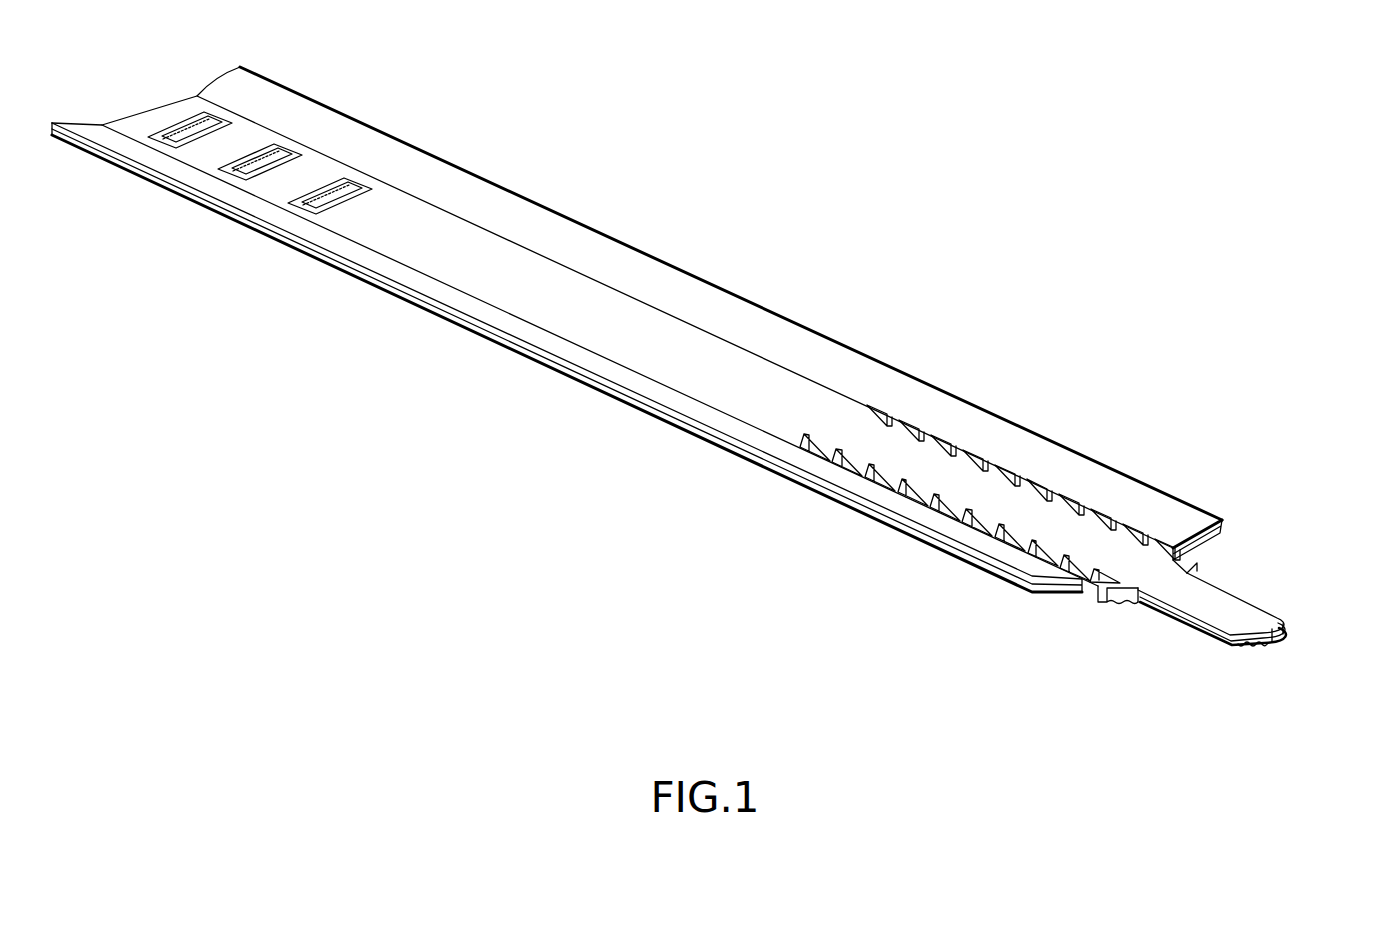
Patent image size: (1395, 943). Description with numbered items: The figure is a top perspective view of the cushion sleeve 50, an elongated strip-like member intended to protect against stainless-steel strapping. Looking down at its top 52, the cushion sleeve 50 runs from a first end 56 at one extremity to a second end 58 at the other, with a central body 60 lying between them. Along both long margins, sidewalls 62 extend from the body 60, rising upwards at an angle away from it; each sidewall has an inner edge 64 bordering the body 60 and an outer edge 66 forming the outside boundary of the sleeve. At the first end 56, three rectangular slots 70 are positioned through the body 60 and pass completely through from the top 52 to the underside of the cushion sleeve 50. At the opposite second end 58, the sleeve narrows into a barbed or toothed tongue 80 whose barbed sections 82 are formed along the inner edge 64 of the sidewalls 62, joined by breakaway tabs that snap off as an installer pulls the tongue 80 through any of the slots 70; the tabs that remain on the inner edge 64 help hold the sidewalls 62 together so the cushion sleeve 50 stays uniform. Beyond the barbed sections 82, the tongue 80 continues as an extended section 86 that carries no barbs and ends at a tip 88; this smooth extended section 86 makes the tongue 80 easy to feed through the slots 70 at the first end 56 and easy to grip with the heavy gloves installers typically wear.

The cushion sleeve 50 is at (789, 176).
The top 52 is at (825, 410).
The first end 56 is at (147, 110).
The second end 58 is at (1200, 522).
The body 60 is at (400, 243).
The sidewalls 62 is at (476, 202).
The inner edge 64 is at (752, 345).
The outer edge 66 is at (598, 232).
The slots 70 is at (350, 190).
The tongue 80 is at (1118, 558).
The barbed sections 82 is at (1133, 532).
The extended section 86 is at (1228, 607).
The tip 88 is at (1278, 633).